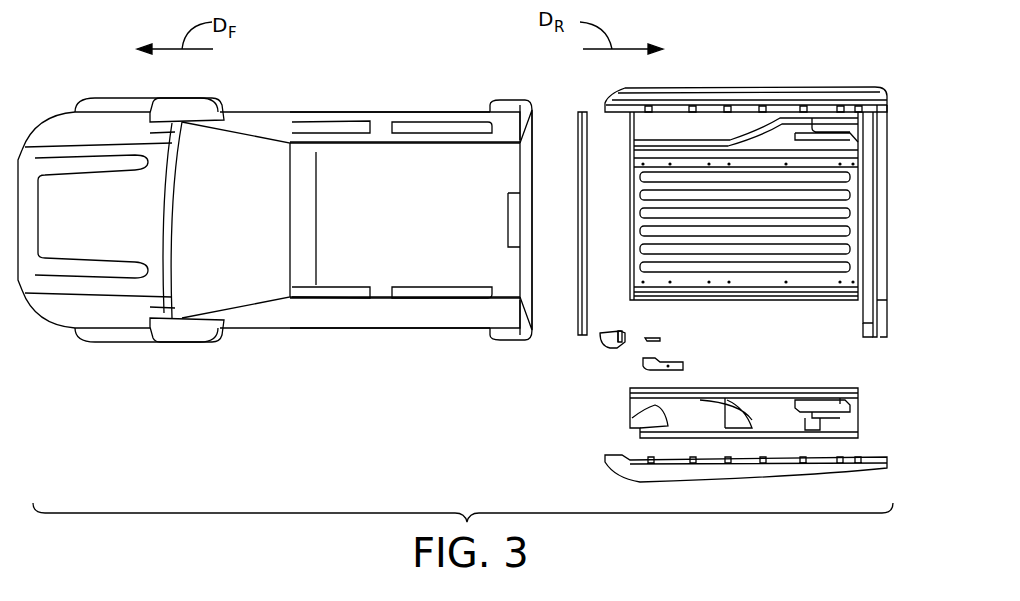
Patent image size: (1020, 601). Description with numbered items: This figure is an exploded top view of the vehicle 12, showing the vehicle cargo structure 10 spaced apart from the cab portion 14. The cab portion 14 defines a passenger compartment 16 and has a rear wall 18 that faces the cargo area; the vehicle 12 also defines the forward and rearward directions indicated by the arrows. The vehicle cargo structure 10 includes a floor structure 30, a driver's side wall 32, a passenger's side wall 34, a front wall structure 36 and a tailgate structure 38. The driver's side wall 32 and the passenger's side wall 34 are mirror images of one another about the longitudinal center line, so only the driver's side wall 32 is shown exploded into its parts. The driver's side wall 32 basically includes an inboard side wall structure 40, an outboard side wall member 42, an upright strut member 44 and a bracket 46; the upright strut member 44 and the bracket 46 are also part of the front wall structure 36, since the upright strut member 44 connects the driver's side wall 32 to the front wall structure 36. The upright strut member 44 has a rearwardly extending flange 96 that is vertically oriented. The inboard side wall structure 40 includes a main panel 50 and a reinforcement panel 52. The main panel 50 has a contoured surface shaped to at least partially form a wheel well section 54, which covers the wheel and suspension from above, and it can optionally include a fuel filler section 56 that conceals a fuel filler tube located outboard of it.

The vehicle cargo structure 10 is at (716, 82).
The vehicle 12 is at (327, 77).
The cab portion 14 is at (427, 108).
The passenger compartment 16 is at (333, 310).
The rear wall 18 is at (538, 228).
The floor structure 30 is at (797, 212).
The driver's side wall 32 is at (548, 388).
The passenger's side wall 34 is at (783, 95).
The front wall structure 36 is at (577, 177).
The tailgate structure 38 is at (887, 223).
The inboard side wall structure 40 is at (630, 407).
The outboard side wall member 42 is at (607, 462).
The upright strut member 44 is at (602, 350).
The bracket 46 is at (652, 332).
The main panel 50 is at (780, 407).
The reinforcement panel 52 is at (668, 358).
The wheel well section 54 is at (728, 417).
The fuel filler section 56 is at (650, 423).
The rearwardly extending flange 96 is at (627, 330).